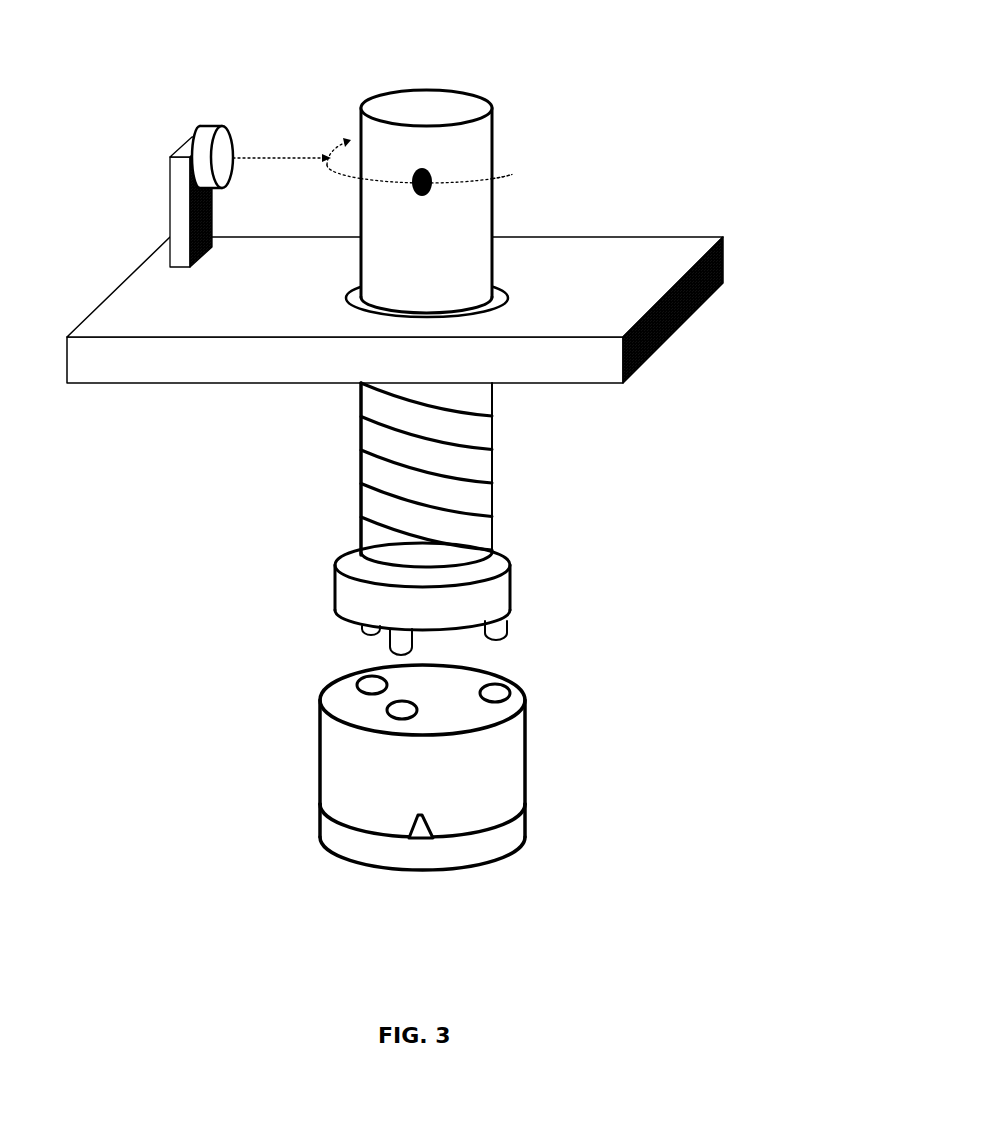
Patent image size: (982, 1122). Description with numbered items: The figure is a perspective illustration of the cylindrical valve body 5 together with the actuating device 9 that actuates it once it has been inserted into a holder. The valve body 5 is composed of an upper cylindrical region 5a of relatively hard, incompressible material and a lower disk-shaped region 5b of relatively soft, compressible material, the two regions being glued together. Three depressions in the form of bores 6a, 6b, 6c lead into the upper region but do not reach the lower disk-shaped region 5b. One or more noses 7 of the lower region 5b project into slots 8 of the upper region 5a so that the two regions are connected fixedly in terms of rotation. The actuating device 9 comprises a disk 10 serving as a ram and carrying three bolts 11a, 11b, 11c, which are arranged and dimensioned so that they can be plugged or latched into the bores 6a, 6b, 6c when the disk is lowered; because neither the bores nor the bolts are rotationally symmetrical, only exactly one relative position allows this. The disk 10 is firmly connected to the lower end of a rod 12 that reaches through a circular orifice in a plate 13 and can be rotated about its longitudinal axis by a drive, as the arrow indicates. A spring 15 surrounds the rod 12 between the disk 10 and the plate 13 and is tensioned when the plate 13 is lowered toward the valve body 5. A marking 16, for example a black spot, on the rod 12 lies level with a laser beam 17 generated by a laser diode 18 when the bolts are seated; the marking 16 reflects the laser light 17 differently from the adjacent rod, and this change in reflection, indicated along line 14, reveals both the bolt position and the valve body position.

The valve body 5 is at (428, 777).
The upper cylindrical region 5a is at (347, 773).
The lower disk-shaped region 5b is at (508, 836).
The bore 6a is at (373, 682).
The bore 6b is at (400, 709).
The bore 6c is at (497, 681).
The nose 7 is at (418, 822).
The slot 8 is at (418, 818).
The actuating device 9 is at (419, 459).
The disk 10 is at (488, 592).
The bolt 11a is at (364, 642).
The bolt 11b is at (413, 655).
The bolt 11c is at (500, 627).
The rod 12 is at (466, 170).
The plate 13 is at (162, 313).
The reference line 14 is at (500, 170).
The spring 15 is at (378, 504).
The marking 16 is at (418, 170).
The laser beam 17 is at (265, 157).
The laser diode 18 is at (240, 125).